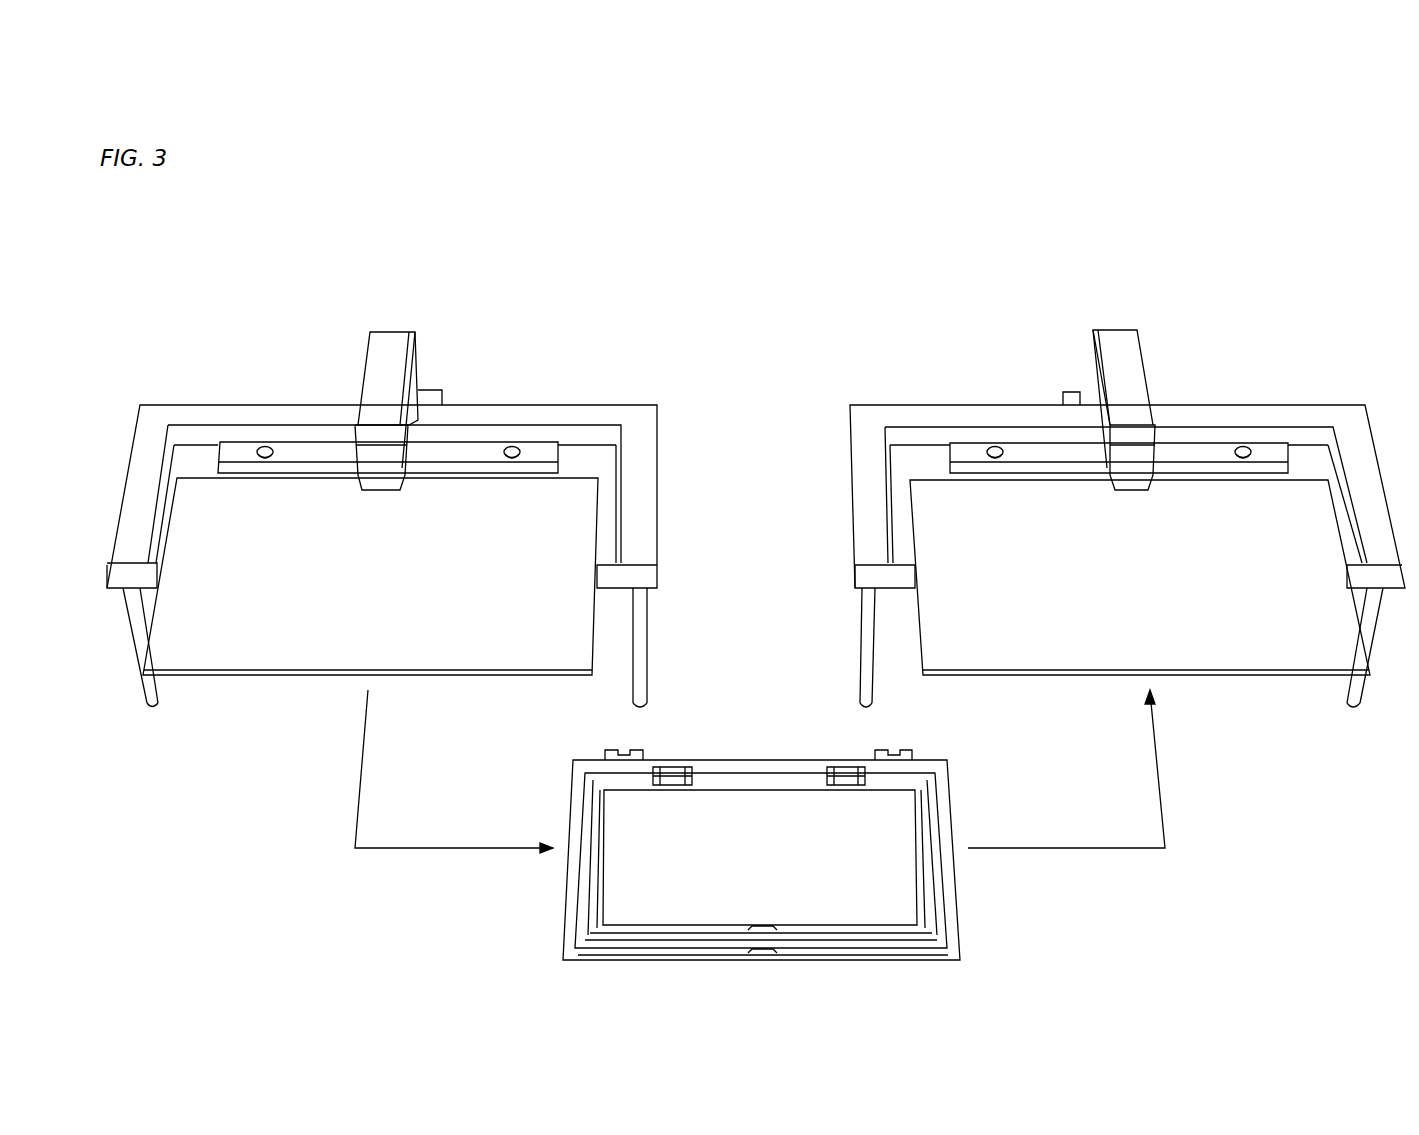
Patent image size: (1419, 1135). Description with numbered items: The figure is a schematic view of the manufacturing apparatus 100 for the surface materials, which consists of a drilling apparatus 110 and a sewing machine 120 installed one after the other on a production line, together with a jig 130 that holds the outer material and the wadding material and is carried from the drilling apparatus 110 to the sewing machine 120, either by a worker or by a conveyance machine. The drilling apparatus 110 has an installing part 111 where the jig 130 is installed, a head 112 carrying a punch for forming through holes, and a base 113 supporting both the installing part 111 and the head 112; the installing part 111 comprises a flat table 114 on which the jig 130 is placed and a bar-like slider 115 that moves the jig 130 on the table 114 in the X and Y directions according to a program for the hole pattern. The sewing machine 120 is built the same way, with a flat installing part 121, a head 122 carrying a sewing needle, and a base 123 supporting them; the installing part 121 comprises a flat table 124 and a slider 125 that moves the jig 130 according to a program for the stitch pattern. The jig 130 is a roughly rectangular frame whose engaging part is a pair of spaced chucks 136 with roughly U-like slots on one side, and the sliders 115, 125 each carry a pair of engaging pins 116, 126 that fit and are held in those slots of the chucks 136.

The manufacturing apparatus 100 is at (775, 258).
The drilling apparatus 110 is at (253, 327).
The installing part 111 is at (345, 786).
The head 112 is at (383, 420).
The base 113 is at (610, 408).
The table 114 is at (258, 655).
The slider 115 is at (333, 457).
The engaging pins 116 is at (265, 448).
The sewing machine 120 is at (1252, 313).
The installing part 121 is at (1305, 786).
The head 122 is at (1130, 420).
The base 123 is at (870, 408).
The table 124 is at (1243, 660).
The slider 125 is at (1197, 458).
The engaging pins 126 is at (995, 448).
The jig 130 is at (962, 785).
The chucks 136 is at (605, 750).